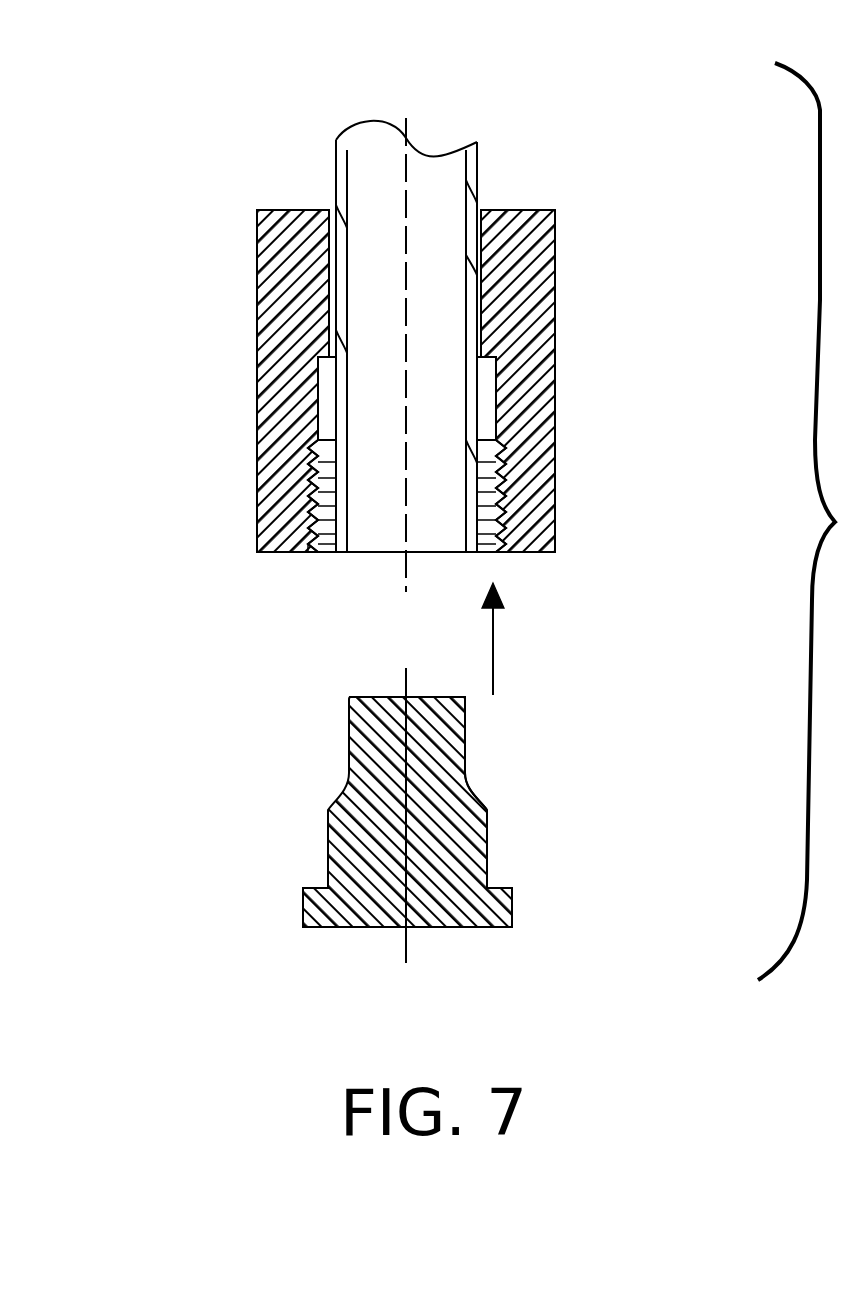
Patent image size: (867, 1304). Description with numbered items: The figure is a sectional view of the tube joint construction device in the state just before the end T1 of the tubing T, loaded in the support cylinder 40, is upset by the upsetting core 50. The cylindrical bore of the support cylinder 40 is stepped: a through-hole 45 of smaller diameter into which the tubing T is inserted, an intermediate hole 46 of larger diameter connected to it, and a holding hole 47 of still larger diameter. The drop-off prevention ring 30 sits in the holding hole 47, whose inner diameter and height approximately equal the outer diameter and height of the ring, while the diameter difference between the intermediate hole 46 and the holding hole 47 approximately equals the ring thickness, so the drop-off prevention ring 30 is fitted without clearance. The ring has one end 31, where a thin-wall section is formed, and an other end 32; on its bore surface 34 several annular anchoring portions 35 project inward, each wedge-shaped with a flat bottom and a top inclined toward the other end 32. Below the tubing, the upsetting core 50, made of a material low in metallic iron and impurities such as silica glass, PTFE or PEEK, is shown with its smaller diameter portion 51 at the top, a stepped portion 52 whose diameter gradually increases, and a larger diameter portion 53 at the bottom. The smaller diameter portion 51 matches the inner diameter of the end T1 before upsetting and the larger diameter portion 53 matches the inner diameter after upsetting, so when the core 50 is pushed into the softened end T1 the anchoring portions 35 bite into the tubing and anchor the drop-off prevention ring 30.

The tubing T is at (335, 160).
The end of the tubing T1 is at (462, 513).
The support cylinder 40 is at (243, 208).
The through-hole 45 is at (478, 268).
The intermediate hole 46 is at (498, 383).
The holding hole 47 is at (499, 552).
The one end of the drop-off prevention ring 31 is at (270, 467).
The other end of the drop-off prevention ring 32 is at (305, 558).
The bore surface 34 is at (258, 497).
The anchoring portion 35 is at (327, 553).
The drop-off prevention ring 30 is at (258, 545).
The upsetting core 50 is at (286, 933).
The smaller diameter portion 51 is at (470, 732).
The stepped portion 52 is at (487, 789).
The larger diameter portion 53 is at (487, 858).